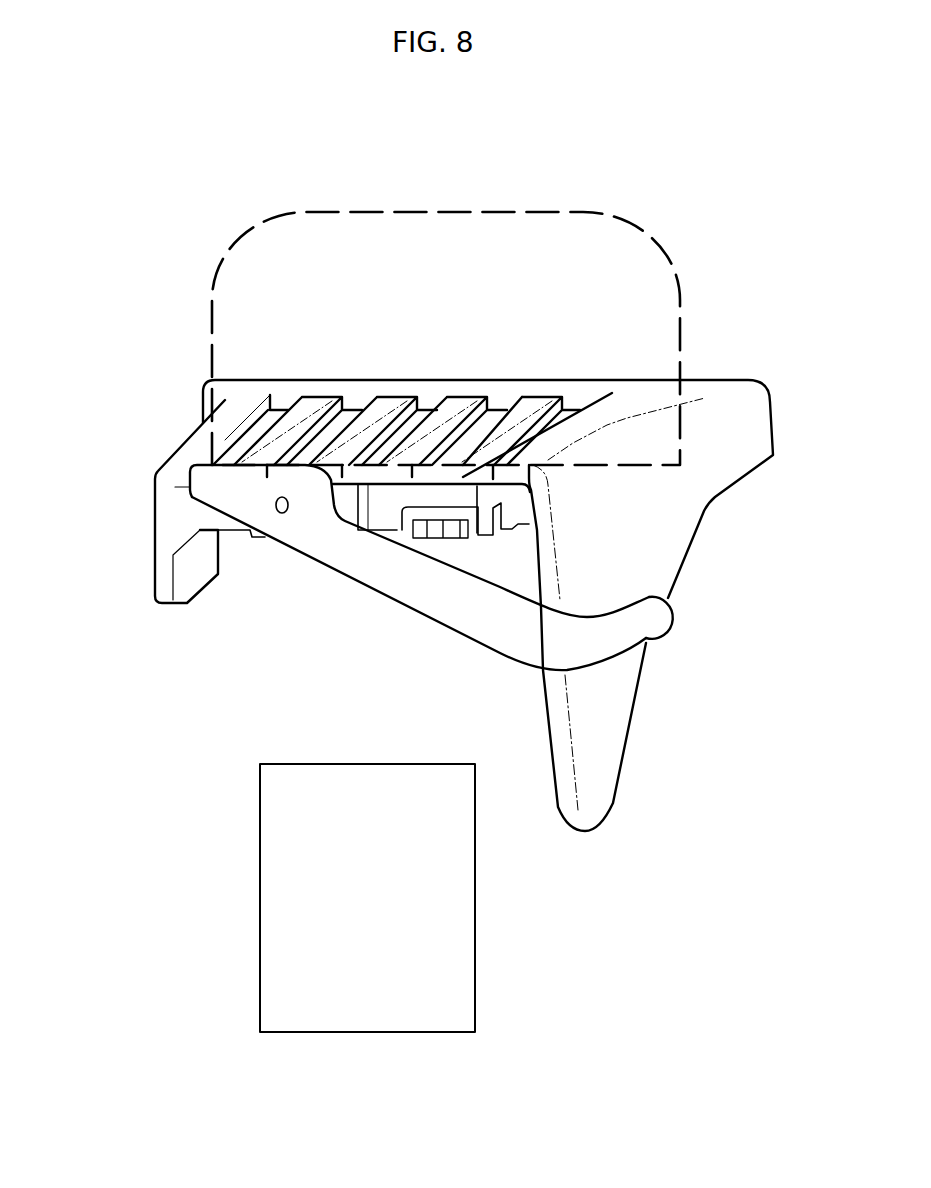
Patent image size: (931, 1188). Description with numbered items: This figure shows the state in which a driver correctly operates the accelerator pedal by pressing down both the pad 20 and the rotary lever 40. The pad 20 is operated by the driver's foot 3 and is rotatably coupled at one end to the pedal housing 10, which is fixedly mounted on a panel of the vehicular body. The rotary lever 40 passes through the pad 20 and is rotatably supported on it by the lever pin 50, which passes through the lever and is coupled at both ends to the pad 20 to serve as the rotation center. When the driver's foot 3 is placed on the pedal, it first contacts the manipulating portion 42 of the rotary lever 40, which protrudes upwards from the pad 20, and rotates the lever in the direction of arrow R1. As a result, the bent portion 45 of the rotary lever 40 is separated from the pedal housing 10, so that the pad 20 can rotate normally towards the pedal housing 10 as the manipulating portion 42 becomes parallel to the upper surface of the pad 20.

The driver's foot 3 is at (430, 211).
The pedal housing 10 is at (475, 913).
The pad 20 is at (320, 380).
The rotary lever 40 is at (377, 615).
The manipulating portion 42 is at (212, 481).
The bent portion 45 is at (658, 618).
The lever pin 50 is at (284, 514).
The arrow R1 is at (503, 552).